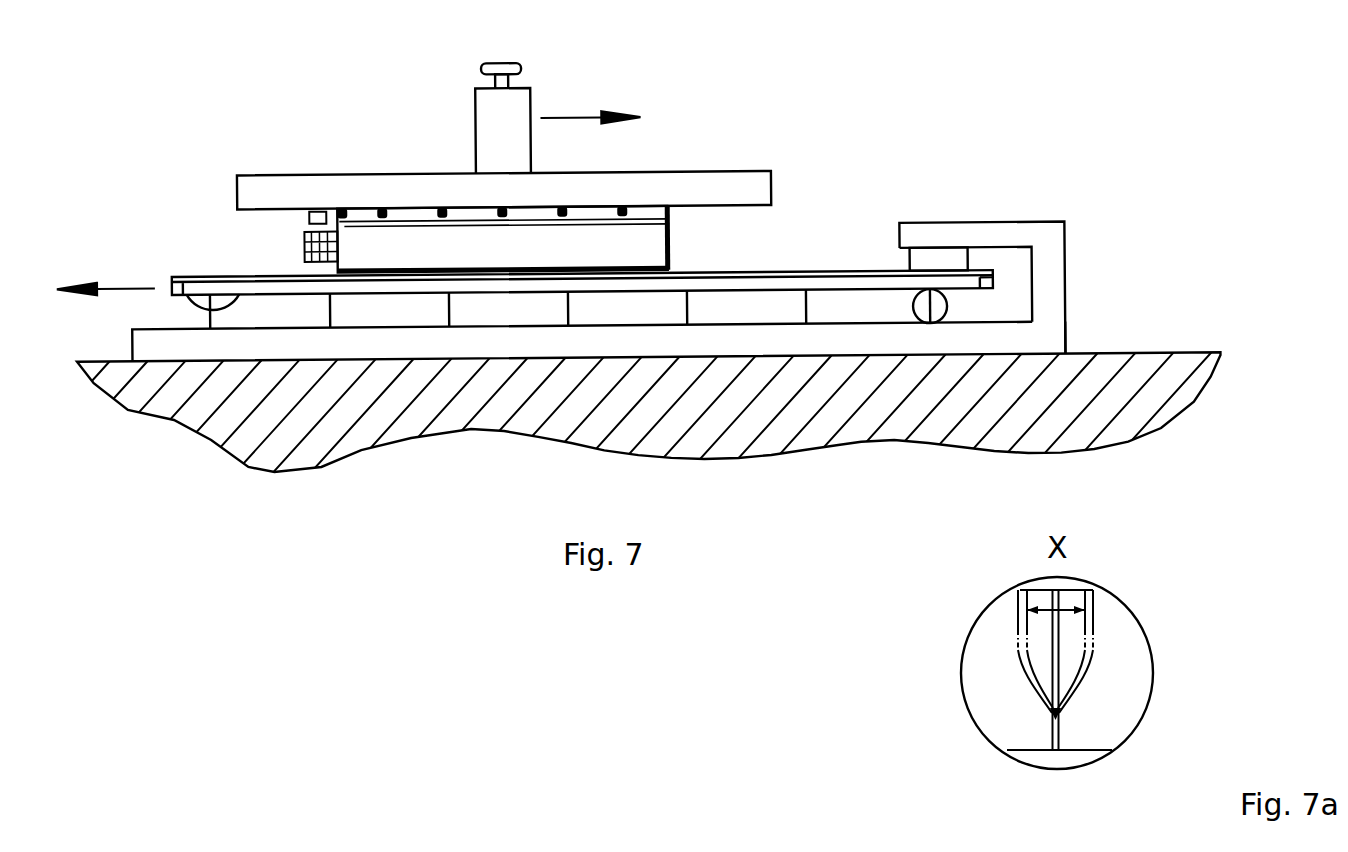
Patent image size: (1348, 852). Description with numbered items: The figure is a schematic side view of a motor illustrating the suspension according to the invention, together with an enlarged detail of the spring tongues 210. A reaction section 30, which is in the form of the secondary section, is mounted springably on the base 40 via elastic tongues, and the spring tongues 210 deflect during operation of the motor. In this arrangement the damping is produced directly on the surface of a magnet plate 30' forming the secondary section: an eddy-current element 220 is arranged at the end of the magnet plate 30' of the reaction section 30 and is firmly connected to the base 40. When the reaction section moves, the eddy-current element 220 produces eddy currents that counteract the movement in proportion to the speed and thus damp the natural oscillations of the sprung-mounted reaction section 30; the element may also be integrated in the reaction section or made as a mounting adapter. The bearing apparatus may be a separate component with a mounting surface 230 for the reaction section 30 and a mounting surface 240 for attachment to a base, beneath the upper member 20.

In FIG. 7, the press plate 20 is at (647, 187).
In FIG. 7, the reaction section 30 is at (581, 184).
In FIG. 7, the magnet plate 30' is at (642, 157).
In FIG. 7, the base 40 is at (339, 415).
In FIG. 7A, the spring tongues 210 is at (1033, 677).
In FIG. 7, the eddy-current element 220 is at (943, 262).
In FIG. 7, the mounting surface 230 is at (186, 288).
In FIG. 7, the mounting surface 240 is at (202, 364).